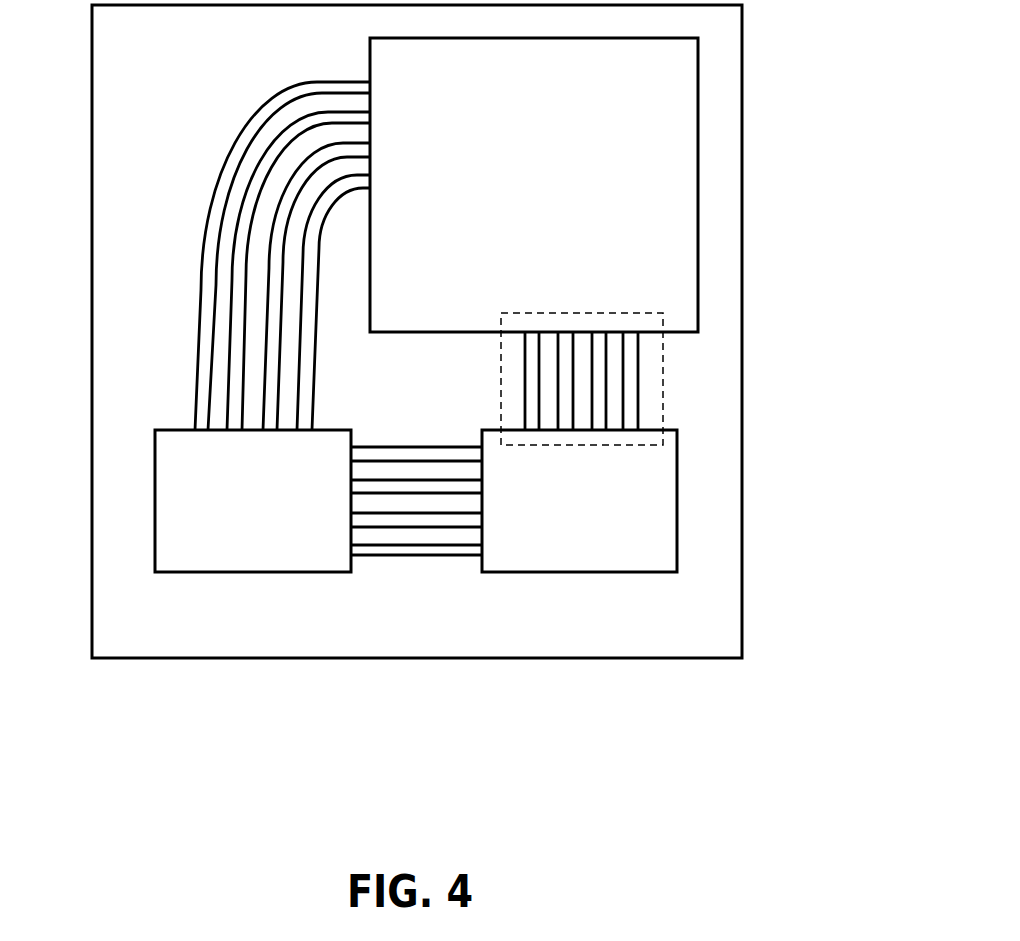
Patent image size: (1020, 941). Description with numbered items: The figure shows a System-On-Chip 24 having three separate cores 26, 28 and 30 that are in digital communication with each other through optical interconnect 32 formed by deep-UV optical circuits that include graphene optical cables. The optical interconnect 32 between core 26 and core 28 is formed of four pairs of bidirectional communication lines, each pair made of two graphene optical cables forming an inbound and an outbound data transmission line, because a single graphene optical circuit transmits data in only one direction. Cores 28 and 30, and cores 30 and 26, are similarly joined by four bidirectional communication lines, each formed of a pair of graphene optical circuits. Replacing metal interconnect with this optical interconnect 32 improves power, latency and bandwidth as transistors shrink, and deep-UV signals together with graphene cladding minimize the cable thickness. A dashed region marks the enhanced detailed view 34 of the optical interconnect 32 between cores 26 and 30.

The System-On-Chip 24 is at (417, 331).
The core 26 is at (534, 185).
The core 28 is at (253, 501).
The core 30 is at (579, 501).
The optical interconnect 32 is at (193, 327).
The enhanced detailed view 34 is at (583, 312).